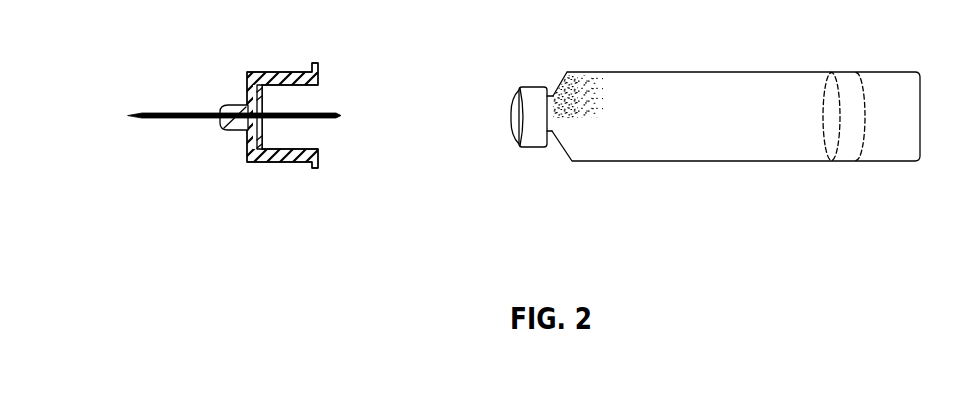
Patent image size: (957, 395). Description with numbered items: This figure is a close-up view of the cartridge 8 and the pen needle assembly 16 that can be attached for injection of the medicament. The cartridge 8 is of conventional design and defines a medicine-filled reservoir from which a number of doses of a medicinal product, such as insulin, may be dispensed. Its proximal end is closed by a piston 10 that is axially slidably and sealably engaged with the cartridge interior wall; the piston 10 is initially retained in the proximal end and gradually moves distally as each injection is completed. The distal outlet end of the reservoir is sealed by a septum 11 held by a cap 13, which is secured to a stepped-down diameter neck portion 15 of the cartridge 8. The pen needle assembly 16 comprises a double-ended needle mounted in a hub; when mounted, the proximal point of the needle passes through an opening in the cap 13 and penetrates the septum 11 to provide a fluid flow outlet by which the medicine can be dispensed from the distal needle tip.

The cartridge 8 is at (733, 98).
The piston 10 is at (850, 143).
The septum 11 is at (511, 117).
The cap 13 is at (535, 148).
The neck portion 15 is at (552, 129).
The pen needle assembly 16 is at (272, 163).